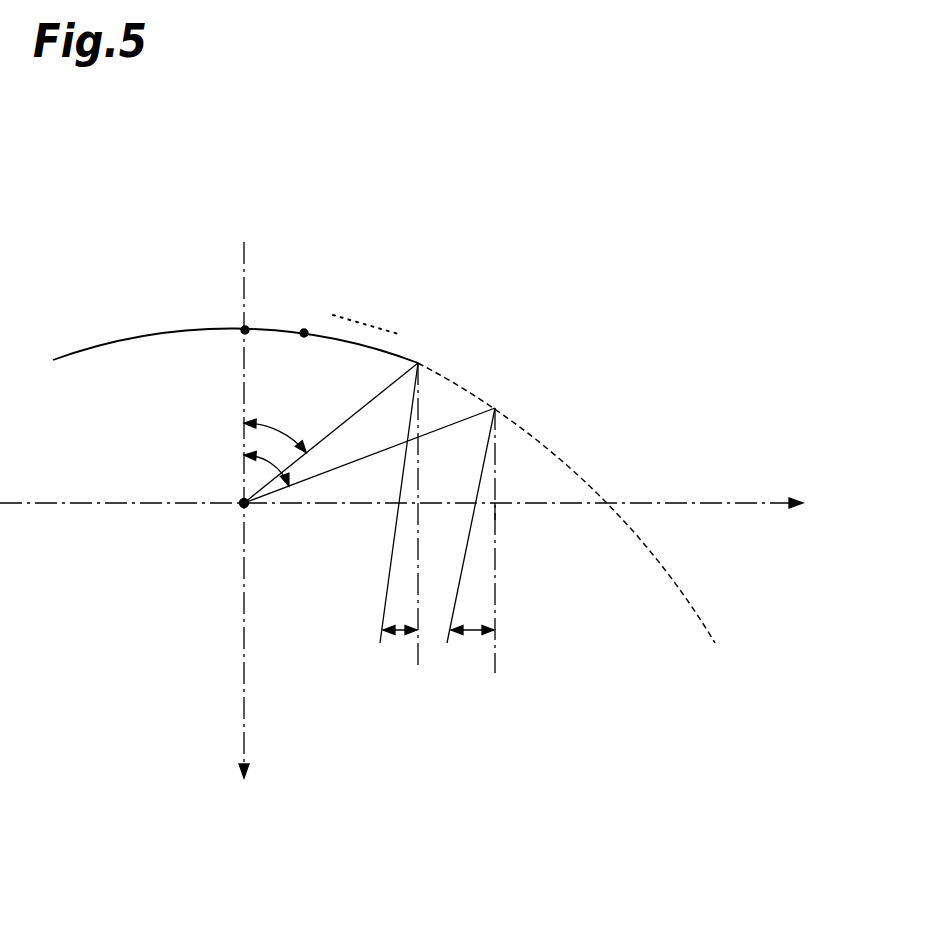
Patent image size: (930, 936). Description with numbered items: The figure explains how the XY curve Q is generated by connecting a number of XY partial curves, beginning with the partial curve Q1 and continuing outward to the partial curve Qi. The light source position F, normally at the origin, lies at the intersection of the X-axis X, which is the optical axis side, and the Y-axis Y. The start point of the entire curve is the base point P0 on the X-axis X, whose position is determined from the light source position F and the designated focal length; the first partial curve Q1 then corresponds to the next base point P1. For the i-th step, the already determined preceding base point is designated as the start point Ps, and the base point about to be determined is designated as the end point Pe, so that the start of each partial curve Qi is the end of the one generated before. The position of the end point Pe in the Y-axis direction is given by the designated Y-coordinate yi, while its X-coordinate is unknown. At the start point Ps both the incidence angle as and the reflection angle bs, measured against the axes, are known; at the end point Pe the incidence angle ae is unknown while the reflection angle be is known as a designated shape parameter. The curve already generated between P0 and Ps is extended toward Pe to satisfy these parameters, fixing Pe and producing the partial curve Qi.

The XY curve Q is at (384, 418).
The XY partial curve (first) Q1 is at (290, 328).
The XY partial curve (i-th) Qi is at (458, 383).
The base point (start point of XY curve) P0 is at (259, 315).
The base point (first) P1 is at (316, 319).
The start point Ps is at (423, 310).
The end point Pe is at (495, 346).
The light source position F is at (244, 504).
The X-axis X is at (253, 531).
The Y-axis Y is at (418, 504).
The Y-coordinate of base point yi is at (510, 521).
The incidence angle at start point as is at (284, 428).
The incidence angle at end point ae is at (272, 462).
The reflection angle at start point bs is at (401, 683).
The reflection angle at end point be is at (474, 683).